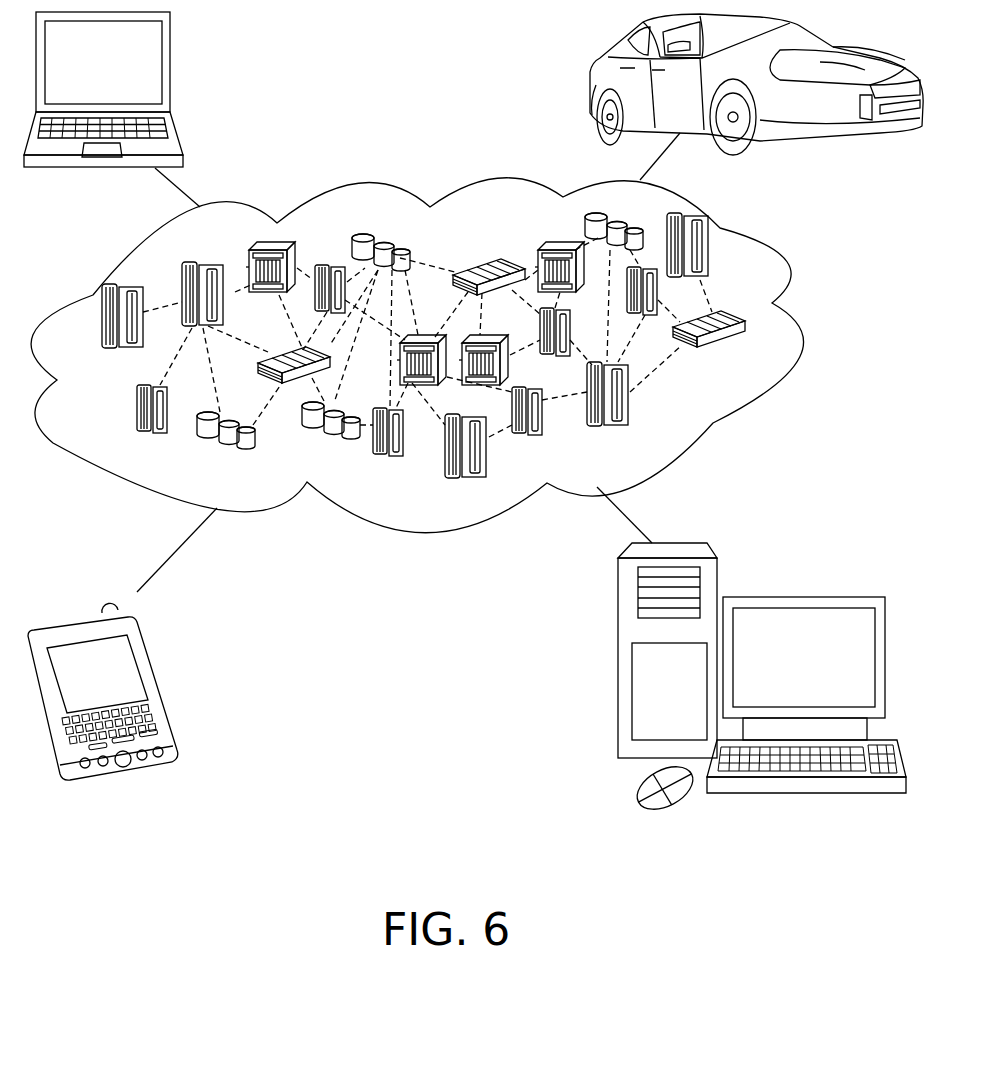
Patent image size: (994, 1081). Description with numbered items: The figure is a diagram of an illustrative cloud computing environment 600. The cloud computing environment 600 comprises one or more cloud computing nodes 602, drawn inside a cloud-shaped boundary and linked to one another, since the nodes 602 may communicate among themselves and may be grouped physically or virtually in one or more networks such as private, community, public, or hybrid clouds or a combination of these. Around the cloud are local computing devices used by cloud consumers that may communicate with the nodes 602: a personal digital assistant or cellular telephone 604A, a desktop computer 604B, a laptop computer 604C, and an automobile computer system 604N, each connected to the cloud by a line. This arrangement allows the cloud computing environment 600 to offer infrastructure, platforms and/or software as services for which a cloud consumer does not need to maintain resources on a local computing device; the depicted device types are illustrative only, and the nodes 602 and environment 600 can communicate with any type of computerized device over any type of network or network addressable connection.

The cloud computing environment 600 is at (753, 322).
The cloud computing node 602 is at (750, 356).
The personal digital assistant or cellular telephone 604A is at (147, 652).
The desktop computer 604B is at (792, 597).
The laptop computer 604C is at (168, 42).
The automobile computer system 604N is at (593, 88).